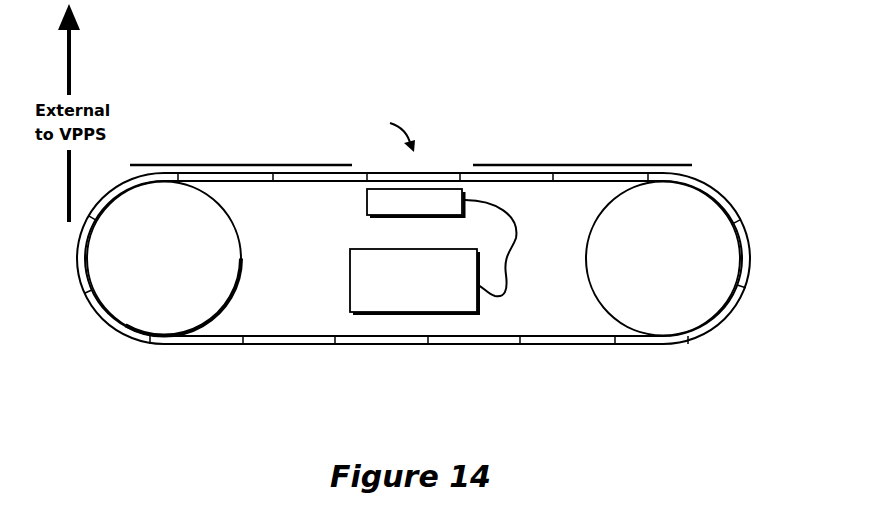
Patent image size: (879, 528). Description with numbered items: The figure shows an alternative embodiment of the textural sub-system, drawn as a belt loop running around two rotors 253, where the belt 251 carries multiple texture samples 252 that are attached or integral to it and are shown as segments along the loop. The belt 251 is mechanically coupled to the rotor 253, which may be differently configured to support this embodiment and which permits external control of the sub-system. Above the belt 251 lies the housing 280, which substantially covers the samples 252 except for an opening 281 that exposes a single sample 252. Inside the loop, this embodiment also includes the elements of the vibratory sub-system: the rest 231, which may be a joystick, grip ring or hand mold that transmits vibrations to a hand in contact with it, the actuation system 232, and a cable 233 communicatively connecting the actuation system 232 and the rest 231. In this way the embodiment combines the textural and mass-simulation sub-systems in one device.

The rest 231 is at (415, 203).
The actuation system 232 is at (414, 281).
The cable 233 is at (520, 232).
The belt 251 is at (325, 182).
The texture samples 252 is at (123, 336).
The rotor 253 is at (413, 259).
The housing 280 is at (196, 165).
The opening 281 is at (379, 129).